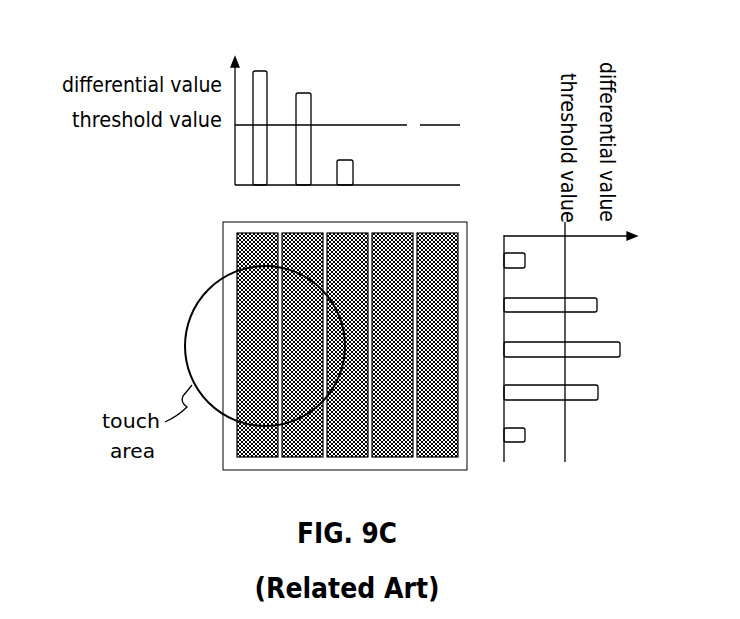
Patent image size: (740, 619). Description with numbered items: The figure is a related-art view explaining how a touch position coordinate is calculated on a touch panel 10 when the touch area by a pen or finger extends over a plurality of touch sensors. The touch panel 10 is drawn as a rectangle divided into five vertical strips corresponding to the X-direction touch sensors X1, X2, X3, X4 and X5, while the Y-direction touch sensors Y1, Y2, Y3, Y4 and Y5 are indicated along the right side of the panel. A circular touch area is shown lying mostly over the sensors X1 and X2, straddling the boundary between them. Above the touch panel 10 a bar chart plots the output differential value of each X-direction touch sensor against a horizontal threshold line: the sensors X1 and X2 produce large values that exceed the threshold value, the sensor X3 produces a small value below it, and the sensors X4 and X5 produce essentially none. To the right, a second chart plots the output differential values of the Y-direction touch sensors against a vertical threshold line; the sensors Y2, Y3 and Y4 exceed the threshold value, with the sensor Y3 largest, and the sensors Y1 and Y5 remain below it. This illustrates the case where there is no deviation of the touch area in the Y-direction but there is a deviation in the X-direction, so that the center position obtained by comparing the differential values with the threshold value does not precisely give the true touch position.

The touch panel 10 is at (307, 336).
The X-direction touch sensor X1 is at (257, 329).
The X-direction touch sensor X2 is at (302, 329).
The X-direction touch sensor X3 is at (347, 329).
The X-direction touch sensor X4 is at (392, 329).
The X-direction touch sensor X5 is at (437, 329).
The Y-direction touch sensor Y1 is at (502, 259).
The Y-direction touch sensor Y2 is at (538, 302).
The Y-direction touch sensor Y3 is at (550, 347).
The Y-direction touch sensor Y4 is at (539, 390).
The Y-direction touch sensor Y5 is at (502, 432).